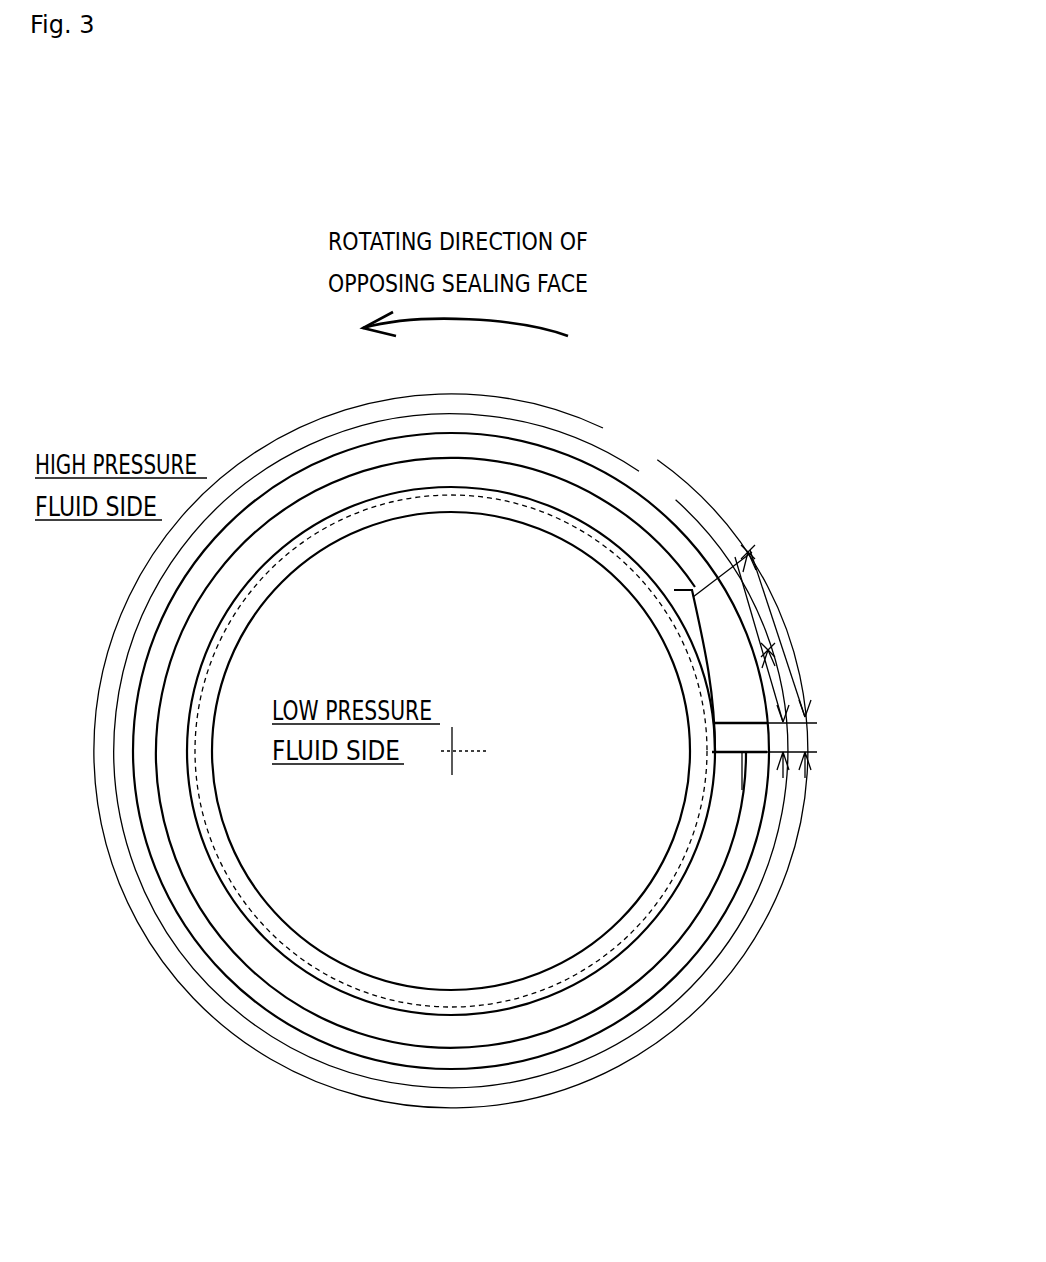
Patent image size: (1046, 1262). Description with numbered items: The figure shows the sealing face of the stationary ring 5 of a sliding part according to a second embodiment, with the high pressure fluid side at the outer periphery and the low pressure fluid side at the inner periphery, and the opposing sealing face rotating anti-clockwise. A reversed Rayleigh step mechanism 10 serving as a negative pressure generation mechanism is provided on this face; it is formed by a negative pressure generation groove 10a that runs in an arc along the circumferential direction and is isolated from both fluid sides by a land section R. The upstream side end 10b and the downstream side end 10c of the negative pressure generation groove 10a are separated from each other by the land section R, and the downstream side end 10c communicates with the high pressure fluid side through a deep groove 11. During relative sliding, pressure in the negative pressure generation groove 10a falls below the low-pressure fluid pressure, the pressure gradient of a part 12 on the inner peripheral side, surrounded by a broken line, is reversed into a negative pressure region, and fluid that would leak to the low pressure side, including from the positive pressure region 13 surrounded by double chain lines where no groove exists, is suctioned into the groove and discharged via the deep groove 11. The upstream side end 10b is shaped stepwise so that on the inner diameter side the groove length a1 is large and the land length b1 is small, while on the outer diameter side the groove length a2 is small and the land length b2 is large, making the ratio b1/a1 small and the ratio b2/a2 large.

The stationary ring 5 is at (326, 463).
The reversed Rayleigh step mechanism 10 is at (465, 458).
The negative pressure generation groove 10a is at (600, 520).
The upstream side end 10b is at (727, 670).
The downstream side end 10c is at (730, 752).
The deep groove 11 is at (750, 740).
The part of the negative pressure generation groove on the inner peripheral side 12 is at (470, 490).
The region where no negative pressure generation groove is provided 13 is at (697, 698).
The land section R is at (278, 495).
The circumferential length of the negative pressure generation groove on the inner d a1 is at (676, 455).
The circumferential length of the negative pressure generation groove on the outer d a2 is at (603, 442).
The circumferential length of the land section on the inner diameter side b1 is at (773, 667).
The circumferential length of the land section on the outer diameter side b2 is at (749, 631).